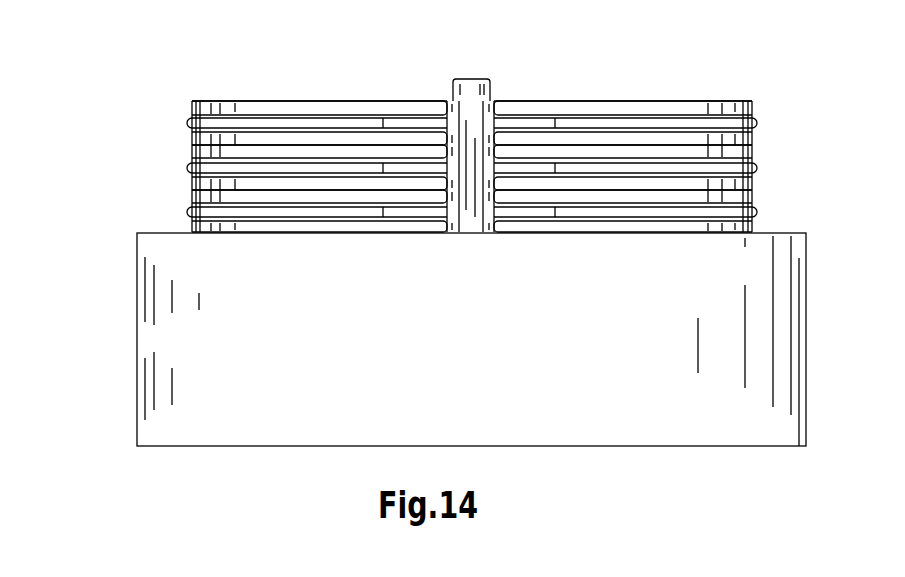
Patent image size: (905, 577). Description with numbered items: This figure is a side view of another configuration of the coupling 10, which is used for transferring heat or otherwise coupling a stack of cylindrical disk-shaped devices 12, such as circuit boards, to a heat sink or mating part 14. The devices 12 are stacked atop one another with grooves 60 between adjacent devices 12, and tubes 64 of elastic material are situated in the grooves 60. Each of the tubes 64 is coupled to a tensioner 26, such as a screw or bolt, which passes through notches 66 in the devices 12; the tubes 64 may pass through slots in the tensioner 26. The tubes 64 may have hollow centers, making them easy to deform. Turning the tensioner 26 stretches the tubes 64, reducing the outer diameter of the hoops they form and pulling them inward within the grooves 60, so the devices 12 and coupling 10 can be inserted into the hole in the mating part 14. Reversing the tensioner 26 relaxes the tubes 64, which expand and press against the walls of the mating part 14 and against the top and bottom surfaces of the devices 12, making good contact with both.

The coupling 10 is at (134, 70).
The cylindrical disk-shaped devices 12 is at (678, 138).
The heat sink or mating part 14 is at (148, 310).
The tensioner 26 is at (472, 79).
The grooves 60 is at (177, 208).
The tubes of elastic material 64 is at (757, 215).
The notches 66 is at (508, 75).